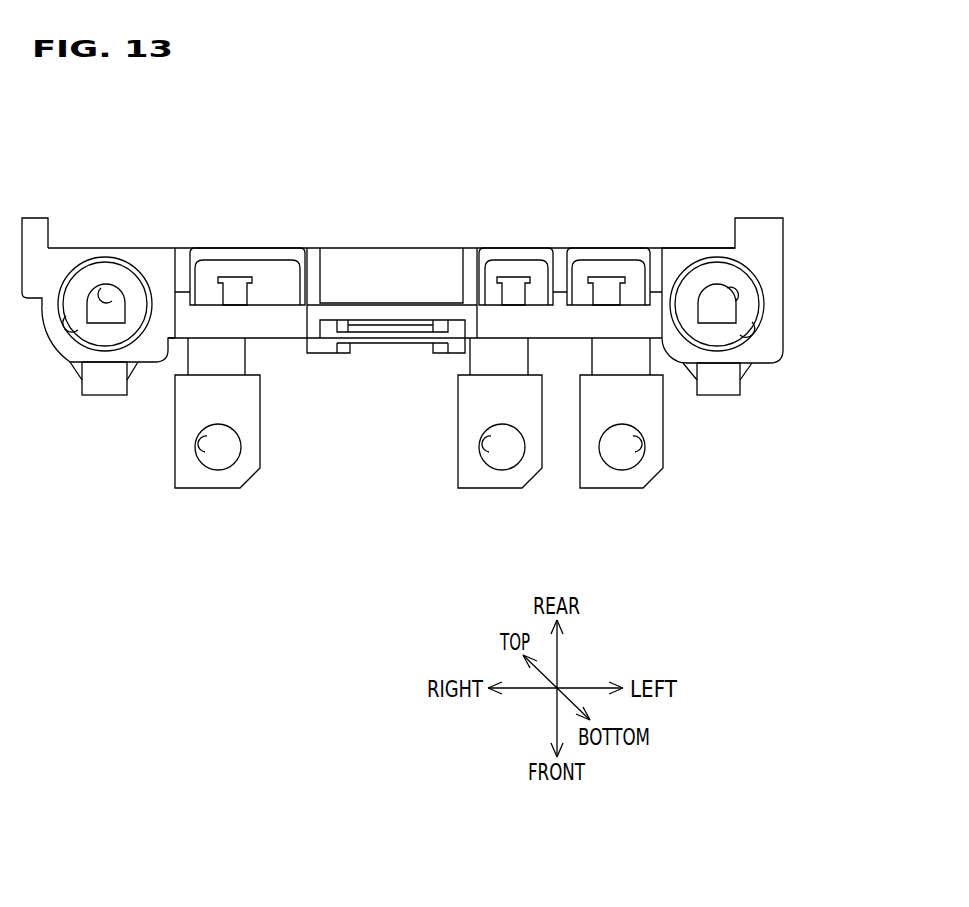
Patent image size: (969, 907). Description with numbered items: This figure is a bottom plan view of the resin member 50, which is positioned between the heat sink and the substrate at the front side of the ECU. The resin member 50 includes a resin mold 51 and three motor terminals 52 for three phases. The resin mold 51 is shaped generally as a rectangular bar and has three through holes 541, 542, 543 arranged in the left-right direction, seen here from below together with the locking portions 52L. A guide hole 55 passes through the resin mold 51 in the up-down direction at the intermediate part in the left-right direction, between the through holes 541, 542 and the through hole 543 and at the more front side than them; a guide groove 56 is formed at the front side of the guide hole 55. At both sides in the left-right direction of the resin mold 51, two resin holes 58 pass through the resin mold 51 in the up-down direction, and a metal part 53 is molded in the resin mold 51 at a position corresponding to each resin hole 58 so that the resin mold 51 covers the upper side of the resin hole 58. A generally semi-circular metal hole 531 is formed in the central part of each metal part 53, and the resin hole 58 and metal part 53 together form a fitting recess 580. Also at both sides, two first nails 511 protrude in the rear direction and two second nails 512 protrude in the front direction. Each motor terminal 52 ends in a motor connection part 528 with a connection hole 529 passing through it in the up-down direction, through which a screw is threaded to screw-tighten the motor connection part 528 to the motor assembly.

The resin member 50 is at (76, 474).
The resin mold 51 is at (357, 277).
The first nail 511 is at (36, 230).
The second nail 512 is at (110, 387).
The motor terminal 52 is at (200, 506).
The locking portion 52L is at (234, 283).
The motor connection part 528 is at (220, 478).
The connection hole 529 is at (206, 442).
The metal part 53 is at (101, 337).
The metal hole 531 is at (104, 302).
The through hole 541 is at (618, 266).
The through hole 542 is at (522, 266).
The through hole 543 is at (272, 266).
The guide hole 55 is at (373, 325).
The guide groove 56 is at (356, 345).
The resin hole 58 is at (73, 333).
The fitting recess 580 is at (90, 275).